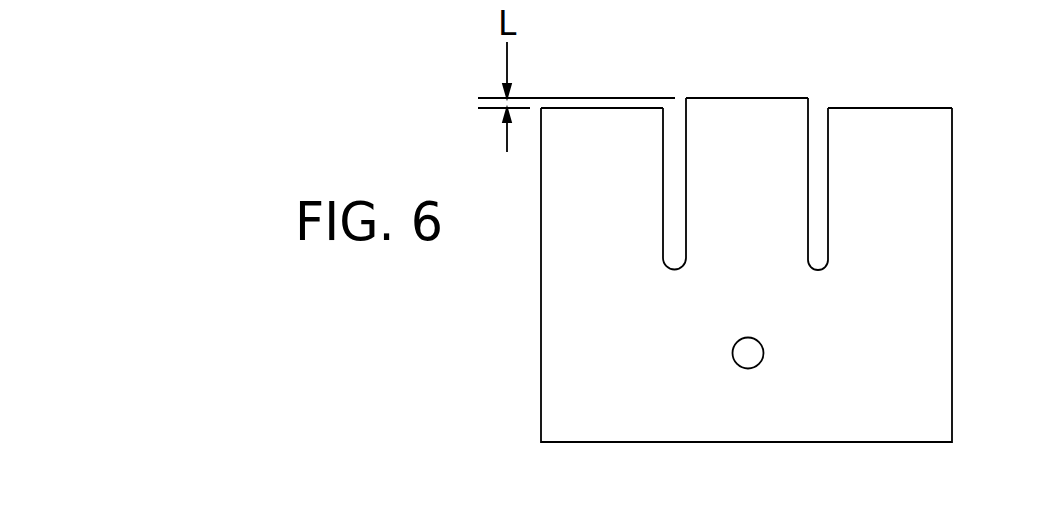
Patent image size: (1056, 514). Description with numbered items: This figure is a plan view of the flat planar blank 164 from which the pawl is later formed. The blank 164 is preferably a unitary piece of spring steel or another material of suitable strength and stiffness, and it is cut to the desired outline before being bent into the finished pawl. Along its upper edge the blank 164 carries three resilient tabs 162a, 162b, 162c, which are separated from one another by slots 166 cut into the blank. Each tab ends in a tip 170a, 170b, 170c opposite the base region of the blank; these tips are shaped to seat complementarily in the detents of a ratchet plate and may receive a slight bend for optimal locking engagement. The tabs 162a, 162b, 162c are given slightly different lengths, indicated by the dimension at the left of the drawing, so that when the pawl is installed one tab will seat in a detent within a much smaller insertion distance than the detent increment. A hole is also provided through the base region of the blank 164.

The planar blank 164 is at (508, 393).
The slot 166 is at (817, 252).
The resilient tab 162a is at (632, 147).
The resilient tab 162b is at (775, 137).
The resilient tab 162c is at (920, 147).
The tip 170a is at (579, 113).
The tip 170b is at (723, 105).
The tip 170c is at (868, 115).